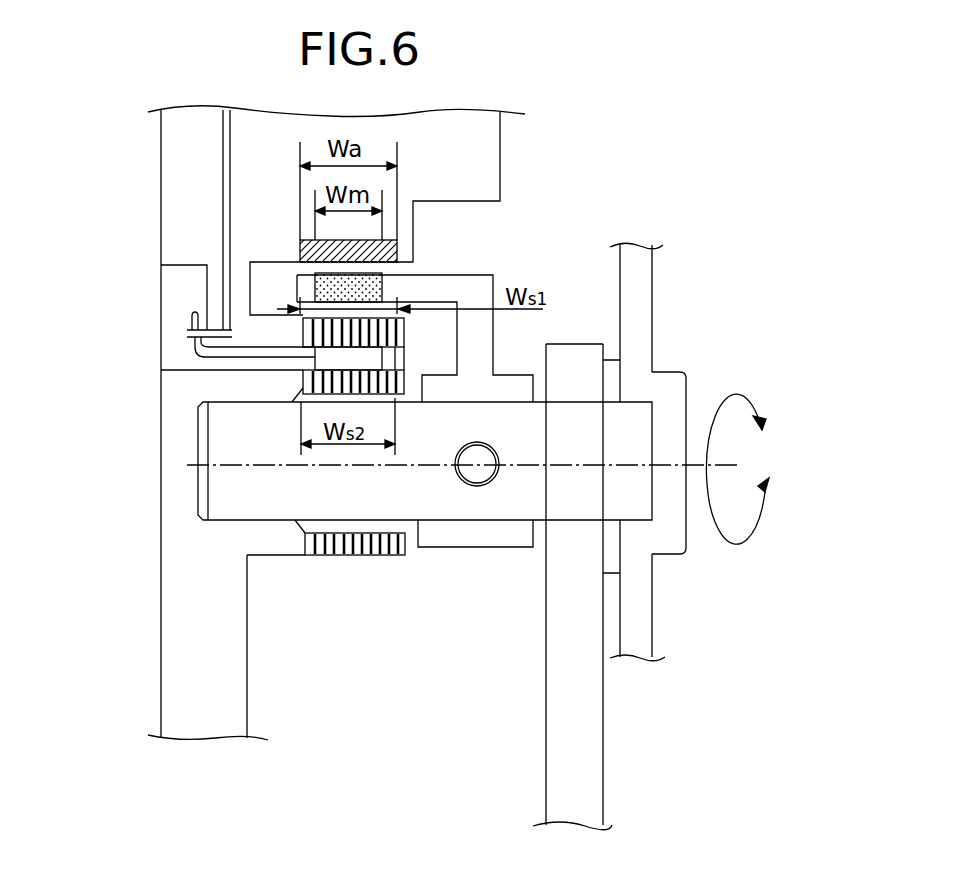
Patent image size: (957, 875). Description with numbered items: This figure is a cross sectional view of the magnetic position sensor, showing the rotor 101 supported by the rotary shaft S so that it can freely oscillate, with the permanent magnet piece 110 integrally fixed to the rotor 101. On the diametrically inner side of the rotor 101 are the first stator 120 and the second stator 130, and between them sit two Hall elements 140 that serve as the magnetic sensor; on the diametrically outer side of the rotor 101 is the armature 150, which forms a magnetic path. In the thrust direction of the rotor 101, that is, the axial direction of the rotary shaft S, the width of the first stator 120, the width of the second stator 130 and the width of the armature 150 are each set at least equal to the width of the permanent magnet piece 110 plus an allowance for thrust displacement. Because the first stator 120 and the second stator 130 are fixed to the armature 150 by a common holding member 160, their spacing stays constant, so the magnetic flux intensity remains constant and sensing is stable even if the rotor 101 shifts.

The rotor 101 is at (495, 280).
The permanent magnet piece 110 is at (382, 289).
The first stator 120 is at (303, 330).
The second stator 130 is at (303, 380).
The Hall elements 140 is at (370, 364).
The armature 150 is at (397, 240).
The holding member 160 is at (186, 627).
The rotary shaft S is at (214, 492).